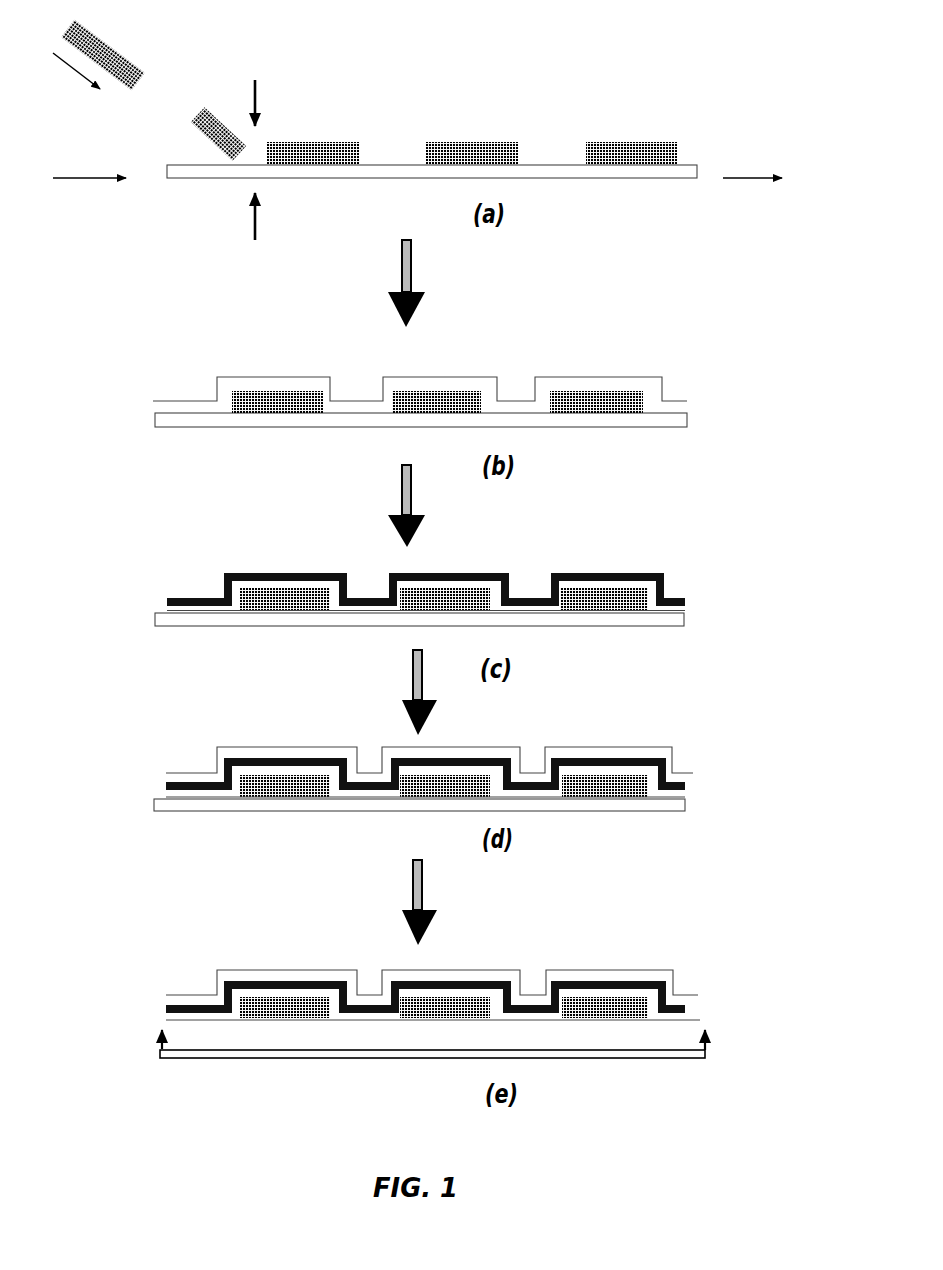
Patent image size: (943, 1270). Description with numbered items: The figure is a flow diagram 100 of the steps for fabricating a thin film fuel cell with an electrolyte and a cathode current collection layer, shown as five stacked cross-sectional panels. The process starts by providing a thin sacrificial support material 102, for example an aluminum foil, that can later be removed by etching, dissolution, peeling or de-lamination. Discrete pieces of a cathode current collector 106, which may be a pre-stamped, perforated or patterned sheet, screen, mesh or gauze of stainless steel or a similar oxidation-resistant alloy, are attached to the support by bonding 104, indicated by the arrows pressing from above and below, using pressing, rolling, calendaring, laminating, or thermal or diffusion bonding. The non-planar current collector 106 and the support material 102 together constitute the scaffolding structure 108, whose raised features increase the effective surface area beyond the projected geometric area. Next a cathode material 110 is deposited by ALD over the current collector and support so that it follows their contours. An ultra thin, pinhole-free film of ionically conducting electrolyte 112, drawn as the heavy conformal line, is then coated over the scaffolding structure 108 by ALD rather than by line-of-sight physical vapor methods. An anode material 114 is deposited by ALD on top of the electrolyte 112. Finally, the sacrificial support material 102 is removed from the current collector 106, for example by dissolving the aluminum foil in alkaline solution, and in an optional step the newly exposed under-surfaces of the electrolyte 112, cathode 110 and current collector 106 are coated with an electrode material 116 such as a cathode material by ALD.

The flow diagram 100 is at (732, 86).
The sacrificial support material 102 is at (697, 165).
The bonding 104 is at (258, 87).
The cathode current collector 106 is at (113, 52).
The scaffolding structure 108 is at (129, 417).
The cathode material 110 is at (662, 380).
The electrolyte 112 is at (665, 570).
The anode material 114 is at (630, 748).
The electrode material 116 is at (710, 1050).